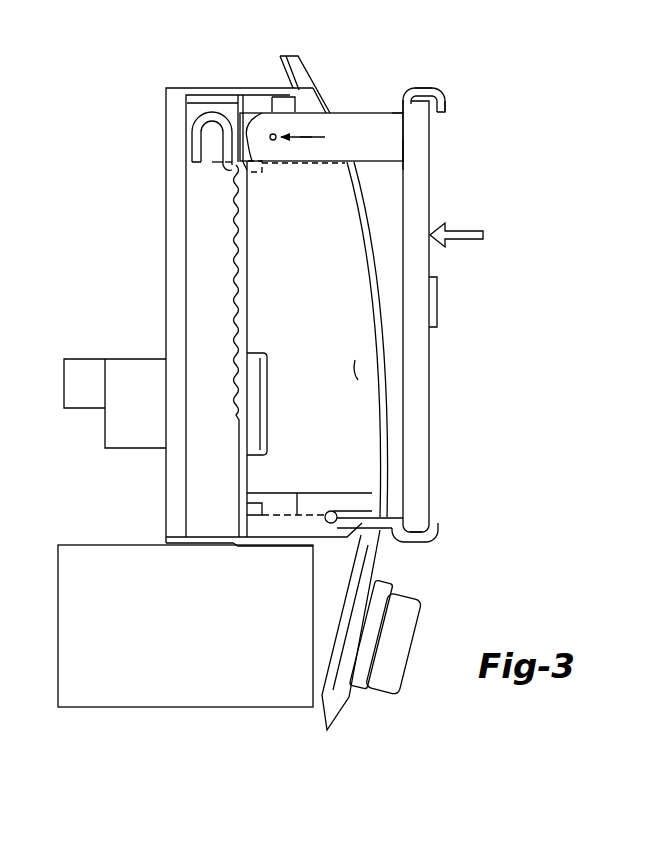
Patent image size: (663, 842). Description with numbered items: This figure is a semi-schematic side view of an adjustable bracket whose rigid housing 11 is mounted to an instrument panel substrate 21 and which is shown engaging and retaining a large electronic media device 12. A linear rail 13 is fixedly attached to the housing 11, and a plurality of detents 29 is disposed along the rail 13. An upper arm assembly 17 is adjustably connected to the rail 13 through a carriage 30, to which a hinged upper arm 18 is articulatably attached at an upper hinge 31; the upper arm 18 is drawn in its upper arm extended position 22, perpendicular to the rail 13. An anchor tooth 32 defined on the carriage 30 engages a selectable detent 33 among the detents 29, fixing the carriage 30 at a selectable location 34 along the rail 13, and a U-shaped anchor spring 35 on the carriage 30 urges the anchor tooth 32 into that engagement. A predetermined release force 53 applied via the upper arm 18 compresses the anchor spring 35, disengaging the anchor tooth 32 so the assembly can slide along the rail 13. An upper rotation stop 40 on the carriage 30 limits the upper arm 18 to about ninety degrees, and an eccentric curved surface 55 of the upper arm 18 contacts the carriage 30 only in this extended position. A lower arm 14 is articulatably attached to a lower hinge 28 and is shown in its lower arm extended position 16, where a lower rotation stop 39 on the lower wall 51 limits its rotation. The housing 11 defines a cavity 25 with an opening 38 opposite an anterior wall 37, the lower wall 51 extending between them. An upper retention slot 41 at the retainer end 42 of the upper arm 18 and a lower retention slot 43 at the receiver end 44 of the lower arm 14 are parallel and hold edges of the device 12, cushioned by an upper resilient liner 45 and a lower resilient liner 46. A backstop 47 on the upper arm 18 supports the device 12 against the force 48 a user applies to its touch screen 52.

The rigid housing 11 is at (285, 548).
The electronic media device 12 is at (433, 197).
The linear rail 13 is at (249, 252).
The lower arm 14 is at (415, 545).
The lower arm extended position 16 is at (297, 493).
The upper arm assembly 17 is at (385, 112).
The hinged upper arm 18 is at (388, 115).
The instrument panel substrate 21 is at (115, 436).
The upper arm extended position 22 is at (291, 165).
The cavity 25 is at (355, 372).
The lower hinge 28 is at (331, 511).
The plurality of detents 29 is at (232, 248).
The carriage 30 is at (234, 105).
The upper hinge 31 is at (250, 123).
The anchor tooth 32 is at (226, 170).
The selectable detent 33 is at (245, 168).
The selectable location 34 is at (217, 165).
The anchor spring 35 is at (197, 133).
The anterior wall 37 is at (200, 458).
The opening 38 is at (387, 310).
The lower rotation stop 39 is at (356, 538).
The upper rotation stop 40 is at (268, 113).
The upper retention slot 41 is at (421, 100).
The retainer end 42 is at (446, 96).
The lower retention slot 43 is at (429, 529).
The receiver end 44 is at (440, 528).
The upper resilient liner 45 is at (430, 89).
The lower resilient liner 46 is at (412, 528).
The backstop 47 is at (402, 155).
The force 48 is at (466, 245).
The lower wall 51 is at (268, 527).
The touch screen 52 is at (431, 343).
The predetermined release force 53 is at (310, 140).
The eccentric curved surface 55 is at (253, 132).